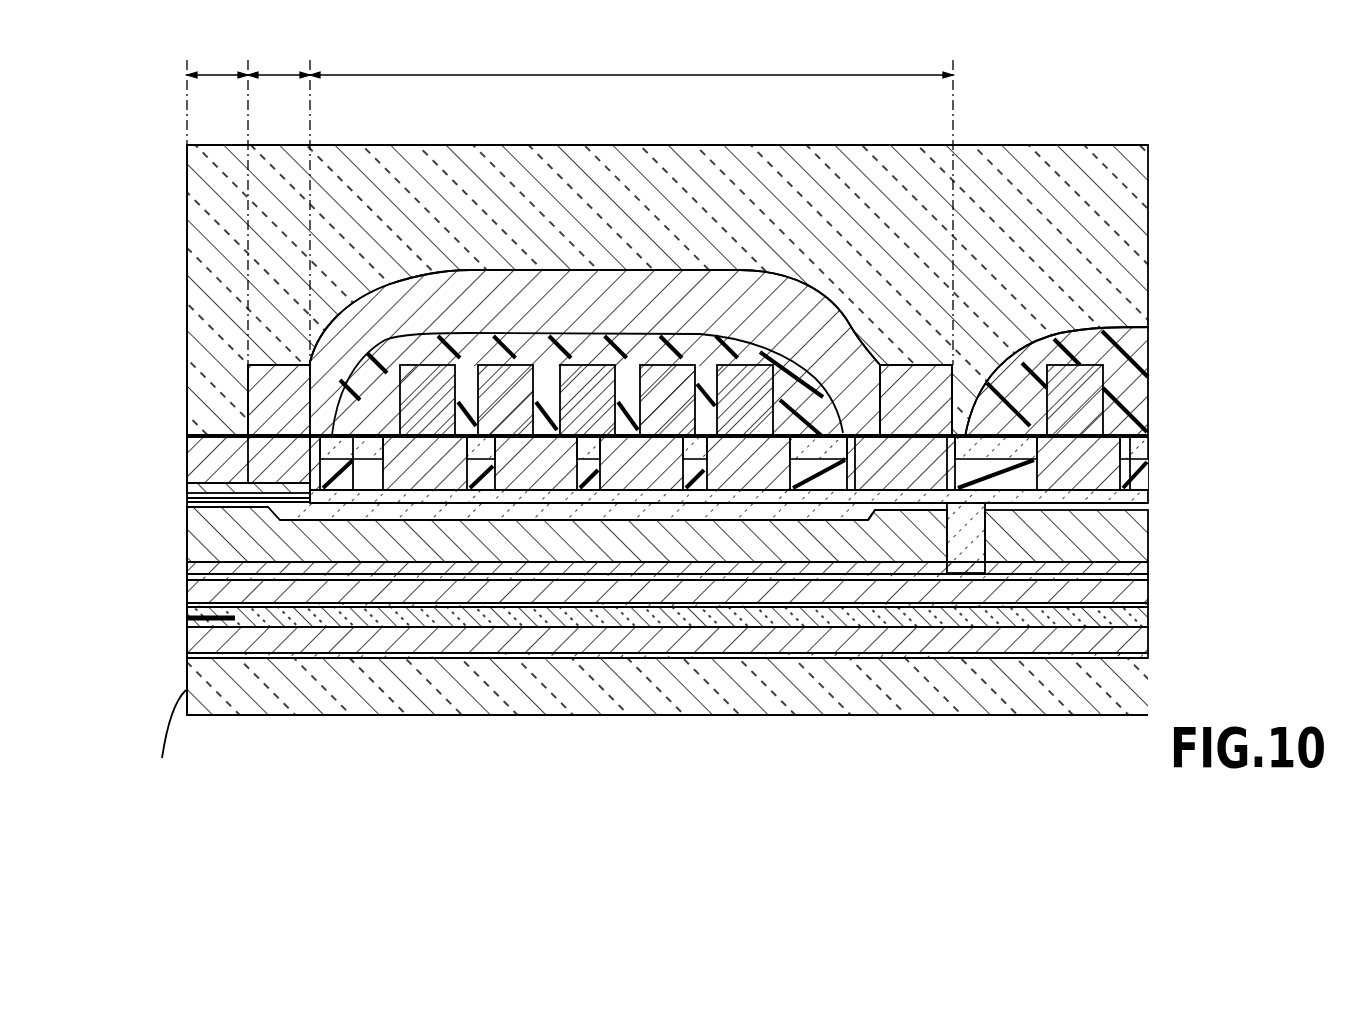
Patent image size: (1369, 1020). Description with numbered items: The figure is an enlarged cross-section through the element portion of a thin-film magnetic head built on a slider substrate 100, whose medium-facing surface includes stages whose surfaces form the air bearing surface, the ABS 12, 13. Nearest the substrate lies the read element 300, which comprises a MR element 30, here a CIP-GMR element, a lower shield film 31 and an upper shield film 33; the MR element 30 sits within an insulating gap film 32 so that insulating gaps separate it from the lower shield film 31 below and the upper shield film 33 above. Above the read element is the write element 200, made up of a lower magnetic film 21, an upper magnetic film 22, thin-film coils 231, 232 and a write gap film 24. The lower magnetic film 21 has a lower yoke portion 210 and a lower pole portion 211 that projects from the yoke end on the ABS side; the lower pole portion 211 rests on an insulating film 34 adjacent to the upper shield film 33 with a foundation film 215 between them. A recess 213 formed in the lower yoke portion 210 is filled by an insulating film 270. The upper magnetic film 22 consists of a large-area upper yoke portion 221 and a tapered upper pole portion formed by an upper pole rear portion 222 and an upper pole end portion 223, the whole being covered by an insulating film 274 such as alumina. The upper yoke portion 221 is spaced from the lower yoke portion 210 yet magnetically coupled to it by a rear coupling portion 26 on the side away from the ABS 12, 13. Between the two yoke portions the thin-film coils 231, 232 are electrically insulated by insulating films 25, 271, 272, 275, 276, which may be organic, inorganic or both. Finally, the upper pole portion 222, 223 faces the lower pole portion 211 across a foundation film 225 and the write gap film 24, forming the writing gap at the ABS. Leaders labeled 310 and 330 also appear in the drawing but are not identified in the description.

The slider substrate 100 is at (1121, 687).
The write element 200 is at (270, 325).
The read element 300 is at (185, 638).
The second stage 12 is at (186, 690).
The third stage 13 is at (174, 724).
The lower magnetic film 21 is at (509, 557).
The lower yoke portion 210 is at (762, 547).
The lower pole portion 211 is at (266, 500).
The recess 213 is at (712, 517).
The foundation film 215 is at (488, 568).
The upper magnetic film 22 is at (433, 262).
The upper yoke portion 221 is at (618, 73).
The upper pole rear portion 222 is at (275, 73).
The upper pole end portion 223 is at (215, 73).
The foundation film 225 is at (295, 500).
The thin-film coil 231 is at (642, 480).
The thin-film coil 232 is at (753, 377).
The write gap film 24 is at (324, 498).
The insulating film 25 is at (428, 505).
The rear coupling portion 26 is at (893, 478).
The insulating film 270 is at (474, 500).
The insulating film 271 is at (586, 464).
The insulating film 272 is at (373, 498).
The insulating film 274 is at (843, 183).
The insulating film 275 is at (540, 423).
The insulating film 276 is at (631, 390).
The MR element 30 is at (225, 528).
The lower shield film 31 is at (913, 640).
The gate insulating film 310 is at (875, 660).
The insulating gap film 32 is at (957, 617).
The upper shield film 33 is at (1035, 593).
The source/drain electrode 330 is at (1000, 613).
The insulating film 34 is at (1068, 580).